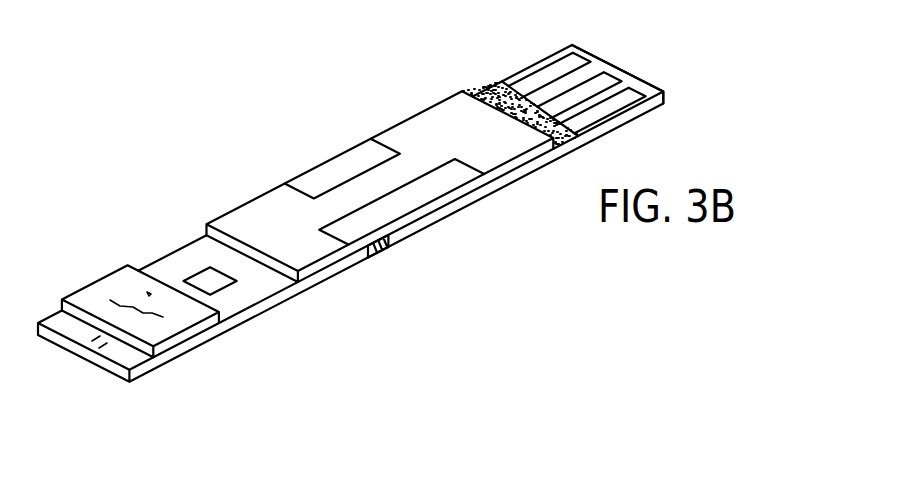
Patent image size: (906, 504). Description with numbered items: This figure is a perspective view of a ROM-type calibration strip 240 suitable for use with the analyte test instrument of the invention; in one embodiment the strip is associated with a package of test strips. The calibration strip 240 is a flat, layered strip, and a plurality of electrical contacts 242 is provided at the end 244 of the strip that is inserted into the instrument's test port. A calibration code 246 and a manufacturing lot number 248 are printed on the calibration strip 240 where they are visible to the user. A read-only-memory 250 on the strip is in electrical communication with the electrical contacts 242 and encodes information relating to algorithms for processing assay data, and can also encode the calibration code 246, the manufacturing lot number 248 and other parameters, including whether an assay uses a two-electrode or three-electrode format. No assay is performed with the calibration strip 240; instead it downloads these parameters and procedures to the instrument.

The ROM-type calibration strip 240 is at (407, 196).
The electrical contacts 242 is at (636, 91).
The end of the calibration strip 244 is at (667, 96).
The calibration code 246 is at (341, 155).
The manufacturing lot number 248 is at (378, 226).
The read-only-memory (ROM) 250 is at (204, 272).